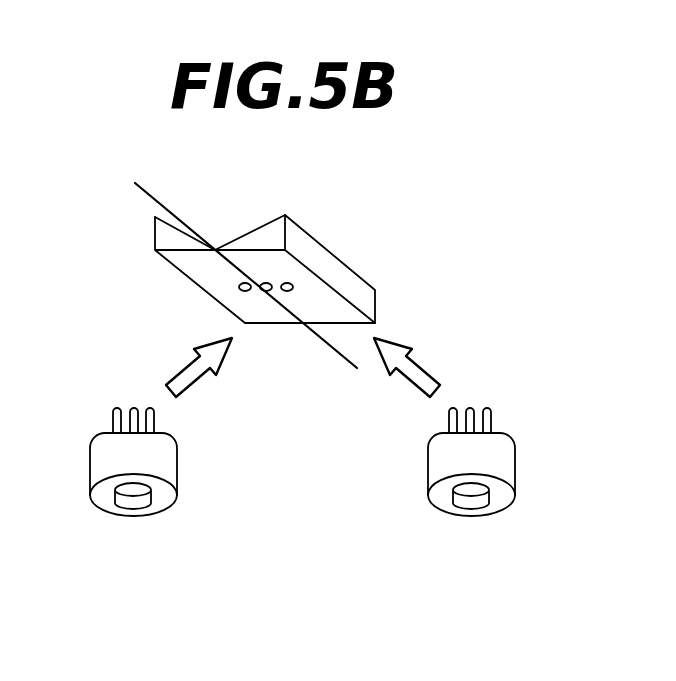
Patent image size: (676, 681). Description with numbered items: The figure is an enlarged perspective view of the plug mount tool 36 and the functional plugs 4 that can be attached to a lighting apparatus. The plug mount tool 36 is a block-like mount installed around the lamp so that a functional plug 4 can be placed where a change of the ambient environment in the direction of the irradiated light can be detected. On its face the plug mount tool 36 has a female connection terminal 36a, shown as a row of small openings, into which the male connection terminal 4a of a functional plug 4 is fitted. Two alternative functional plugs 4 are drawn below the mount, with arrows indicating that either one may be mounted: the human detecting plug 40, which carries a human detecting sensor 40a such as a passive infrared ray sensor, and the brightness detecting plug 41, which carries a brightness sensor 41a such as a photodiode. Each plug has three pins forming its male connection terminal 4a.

The functional plug 4 is at (303, 500).
The male connection terminal 4a is at (113, 415).
The plug mount tool 36 is at (320, 295).
The female connection terminal 36a is at (240, 288).
The human detecting plug 40 is at (163, 507).
The human detecting sensor 40a is at (128, 513).
The brightness detecting plug 41 is at (440, 507).
The brightness sensor 41a is at (473, 513).